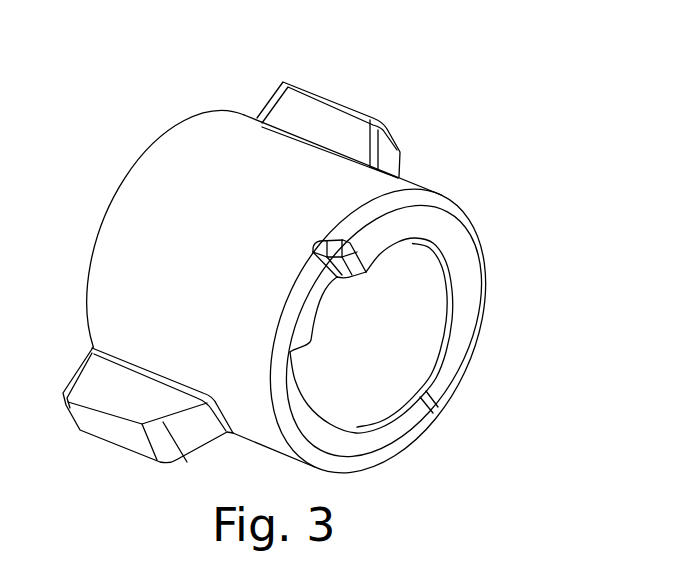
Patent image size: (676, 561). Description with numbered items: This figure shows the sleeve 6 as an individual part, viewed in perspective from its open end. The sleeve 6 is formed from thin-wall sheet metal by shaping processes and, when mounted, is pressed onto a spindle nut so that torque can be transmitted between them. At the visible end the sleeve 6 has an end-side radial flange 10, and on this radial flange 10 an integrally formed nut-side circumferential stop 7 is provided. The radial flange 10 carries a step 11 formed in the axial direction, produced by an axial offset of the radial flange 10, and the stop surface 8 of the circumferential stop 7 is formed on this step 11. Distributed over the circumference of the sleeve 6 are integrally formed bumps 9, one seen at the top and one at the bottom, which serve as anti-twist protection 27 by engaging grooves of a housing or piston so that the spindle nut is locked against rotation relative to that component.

The sleeve 6 is at (150, 190).
The circumferential stop 7 is at (362, 300).
The stop surface 8 is at (362, 300).
The bumps 9 is at (332, 100).
The radial flange 10 is at (455, 354).
The step 11 is at (347, 275).
The anti-twist protection 27 is at (322, 118).